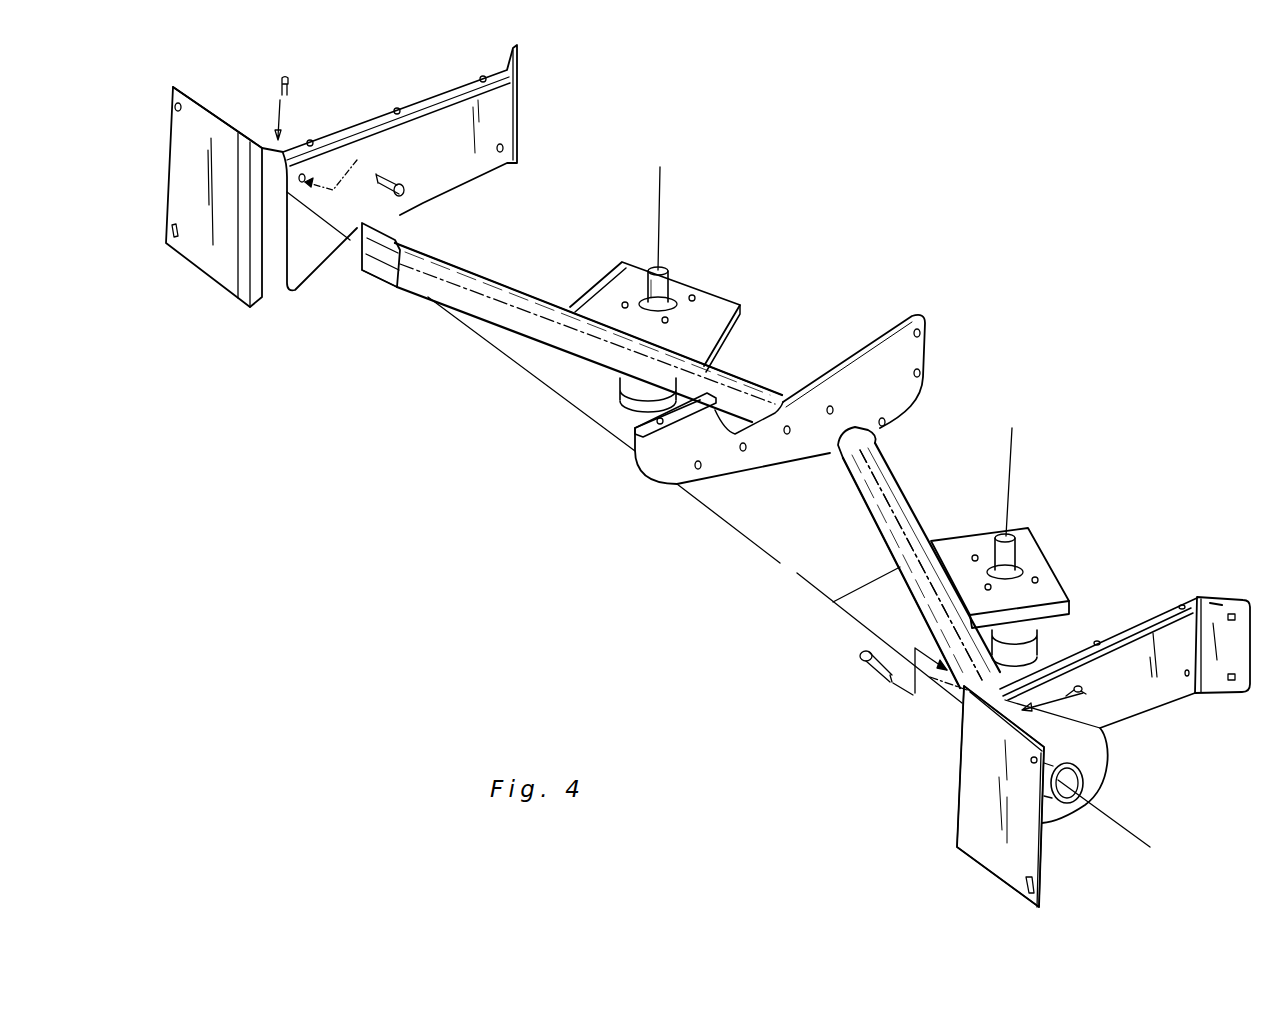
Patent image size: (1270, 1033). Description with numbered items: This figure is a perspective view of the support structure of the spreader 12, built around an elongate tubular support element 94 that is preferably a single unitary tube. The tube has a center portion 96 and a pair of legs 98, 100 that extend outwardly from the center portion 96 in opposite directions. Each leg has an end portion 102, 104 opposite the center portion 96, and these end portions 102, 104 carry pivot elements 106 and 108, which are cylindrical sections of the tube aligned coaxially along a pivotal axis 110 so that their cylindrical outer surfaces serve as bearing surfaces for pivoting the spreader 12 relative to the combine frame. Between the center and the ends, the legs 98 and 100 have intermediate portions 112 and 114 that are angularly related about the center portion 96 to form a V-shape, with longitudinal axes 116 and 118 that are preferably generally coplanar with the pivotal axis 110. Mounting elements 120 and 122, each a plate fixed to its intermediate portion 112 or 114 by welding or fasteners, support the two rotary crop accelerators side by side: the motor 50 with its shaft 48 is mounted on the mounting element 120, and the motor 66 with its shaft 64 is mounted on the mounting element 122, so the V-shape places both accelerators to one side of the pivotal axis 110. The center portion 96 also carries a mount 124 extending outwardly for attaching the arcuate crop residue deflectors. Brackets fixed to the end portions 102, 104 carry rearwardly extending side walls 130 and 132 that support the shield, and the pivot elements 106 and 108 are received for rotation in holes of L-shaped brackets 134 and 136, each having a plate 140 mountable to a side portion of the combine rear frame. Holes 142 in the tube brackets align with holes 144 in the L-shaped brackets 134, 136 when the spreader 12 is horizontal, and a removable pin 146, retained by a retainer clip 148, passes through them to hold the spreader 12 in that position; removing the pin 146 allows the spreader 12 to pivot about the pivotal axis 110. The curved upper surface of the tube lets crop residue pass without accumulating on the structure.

The spreader 12 is at (397, 520).
The shaft 48 is at (1010, 530).
The motor 50 is at (1070, 627).
The shaft 64 is at (664, 267).
The motor 66 is at (605, 396).
The tubular support element 94 is at (866, 516).
The center portion 96 is at (832, 458).
The leg 98 is at (833, 602).
The leg 100 is at (510, 343).
The end portion 102 is at (1083, 767).
The end portion 104 is at (373, 280).
The pivot element 106 is at (1083, 797).
The pivot element 108 is at (388, 235).
The pivotal axis 110 is at (195, 122).
The intermediate portion 112 is at (912, 517).
The intermediate portion 114 is at (548, 300).
The longitudinal axis 116 is at (932, 587).
The longitudinal axis 118 is at (485, 297).
The mounting element 120 is at (1040, 547).
The mounting element 122 is at (717, 297).
The mount 124 is at (927, 345).
The side wall 130 is at (1175, 707).
The side wall 132 is at (483, 170).
The L-shaped bracket 134 is at (997, 880).
The L-shaped bracket 136 is at (203, 273).
The plate 140 is at (973, 768).
The hole 142 is at (303, 176).
The hole 144 is at (1050, 678).
The pin 146 is at (858, 657).
The retainer clip 148 is at (288, 73).